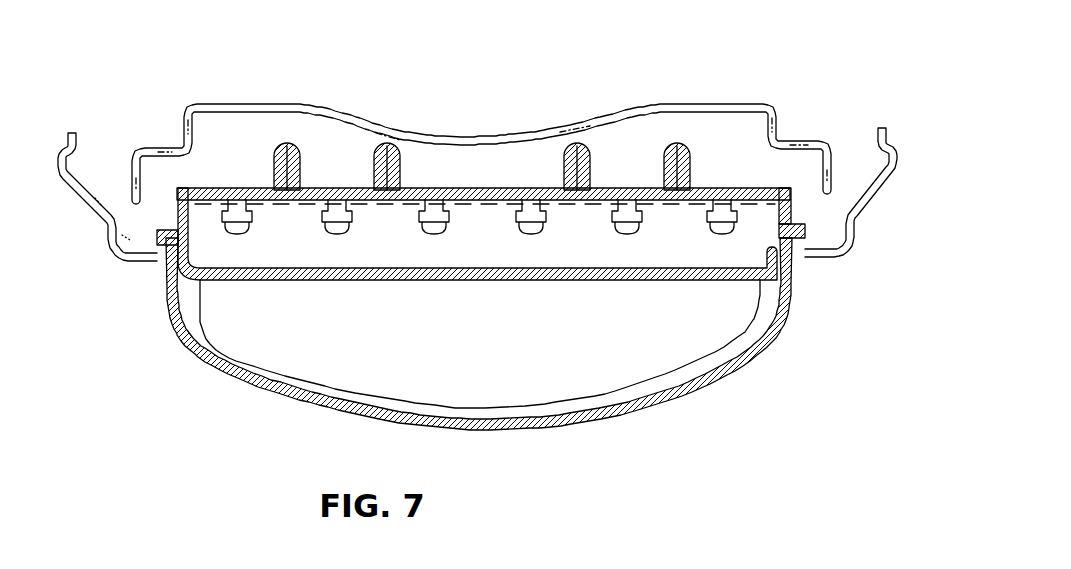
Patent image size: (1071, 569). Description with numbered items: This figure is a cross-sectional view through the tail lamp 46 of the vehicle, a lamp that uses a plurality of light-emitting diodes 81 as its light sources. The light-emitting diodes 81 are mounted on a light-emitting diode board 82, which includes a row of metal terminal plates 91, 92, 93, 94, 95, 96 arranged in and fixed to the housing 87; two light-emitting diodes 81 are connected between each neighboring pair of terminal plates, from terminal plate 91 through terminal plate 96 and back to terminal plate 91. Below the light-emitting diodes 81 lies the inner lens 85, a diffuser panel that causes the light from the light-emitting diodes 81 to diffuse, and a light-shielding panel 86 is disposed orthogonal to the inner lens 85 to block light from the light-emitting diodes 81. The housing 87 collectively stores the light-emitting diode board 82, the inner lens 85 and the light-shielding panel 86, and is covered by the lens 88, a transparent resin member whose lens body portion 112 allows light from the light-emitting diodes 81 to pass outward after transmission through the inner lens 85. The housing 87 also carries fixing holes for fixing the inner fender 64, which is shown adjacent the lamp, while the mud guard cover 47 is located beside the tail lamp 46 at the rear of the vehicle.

The tail lamp 46 is at (217, 421).
The mud guard cover 47 is at (843, 282).
The inner fender 64 is at (156, 138).
The light-emitting diodes 81 is at (237, 234).
The light-emitting diode board 82 is at (329, 173).
The inner lens 85 is at (662, 280).
The light-shielding panel 86 is at (602, 396).
The housing 87 is at (755, 174).
The lens 88 is at (519, 374).
The terminal plate 91 is at (212, 200).
The terminal plate 92 is at (297, 160).
The terminal plate 93 is at (400, 152).
The terminal plate 94 is at (487, 190).
The terminal plate 95 is at (590, 157).
The terminal plate 96 is at (688, 157).
The lens body portion 112 is at (768, 342).